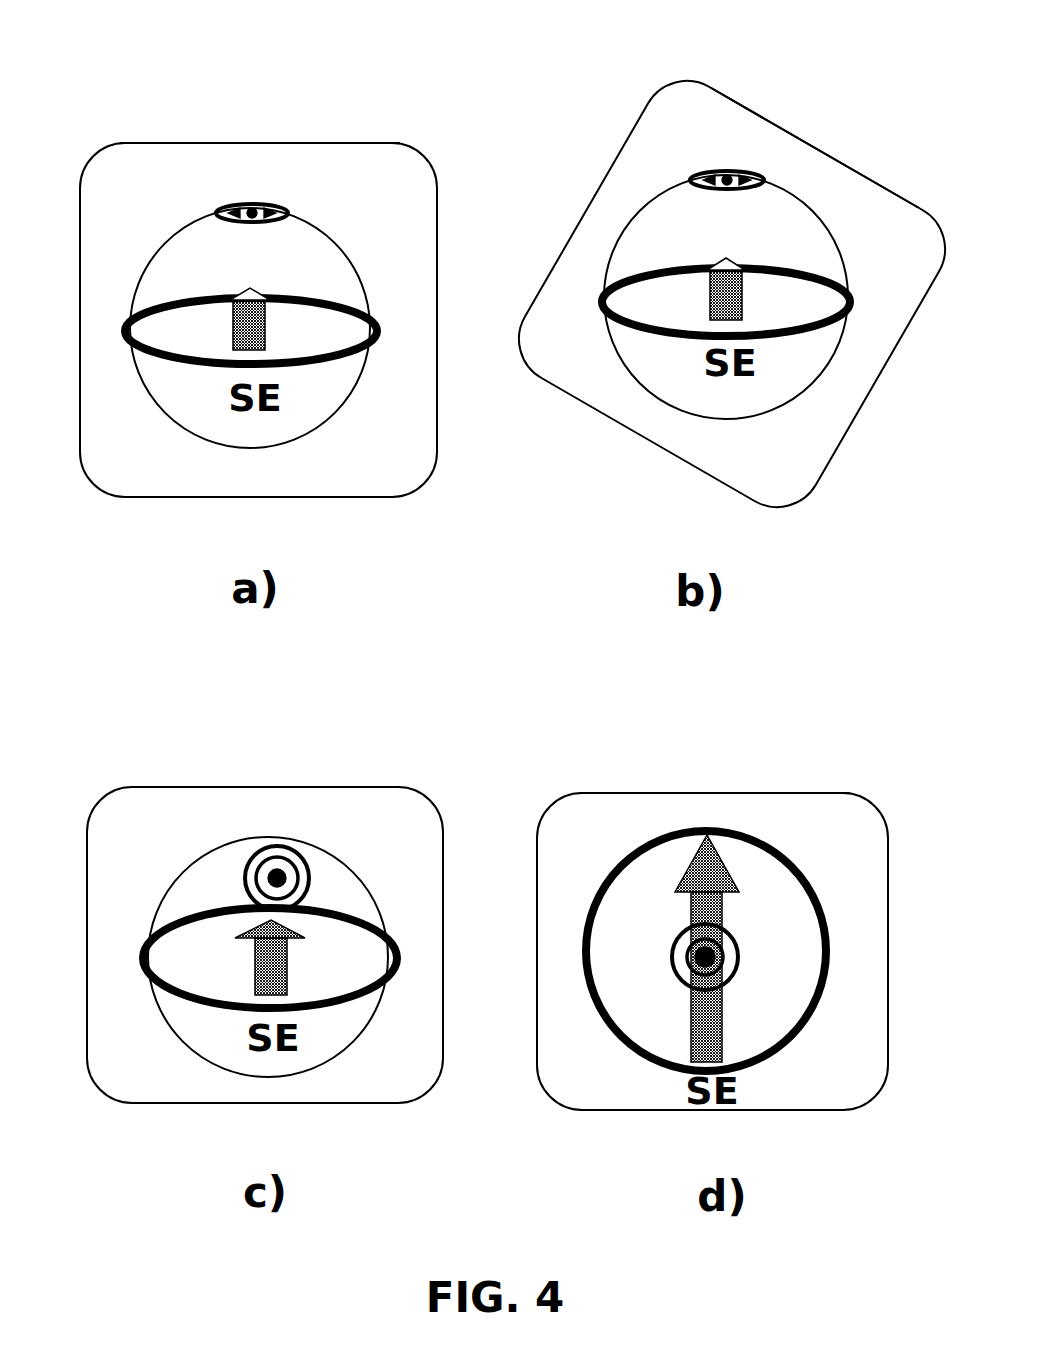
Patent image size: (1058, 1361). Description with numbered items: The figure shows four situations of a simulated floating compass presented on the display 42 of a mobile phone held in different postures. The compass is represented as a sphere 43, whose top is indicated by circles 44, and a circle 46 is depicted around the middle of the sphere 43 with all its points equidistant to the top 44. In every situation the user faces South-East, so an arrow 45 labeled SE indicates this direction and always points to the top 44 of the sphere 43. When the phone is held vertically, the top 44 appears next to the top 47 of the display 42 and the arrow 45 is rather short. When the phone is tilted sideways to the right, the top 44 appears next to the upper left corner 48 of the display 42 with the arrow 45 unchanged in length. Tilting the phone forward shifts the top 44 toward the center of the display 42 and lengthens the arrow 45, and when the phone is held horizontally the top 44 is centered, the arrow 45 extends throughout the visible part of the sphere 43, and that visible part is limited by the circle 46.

The display 42 is at (162, 498).
The sphere 43 is at (160, 268).
The top of the sphere 44 is at (255, 203).
The arrow 45 is at (242, 297).
The circle 46 is at (315, 300).
The top of the display 47 is at (240, 145).
The upper left corner of the display 48 is at (670, 82).